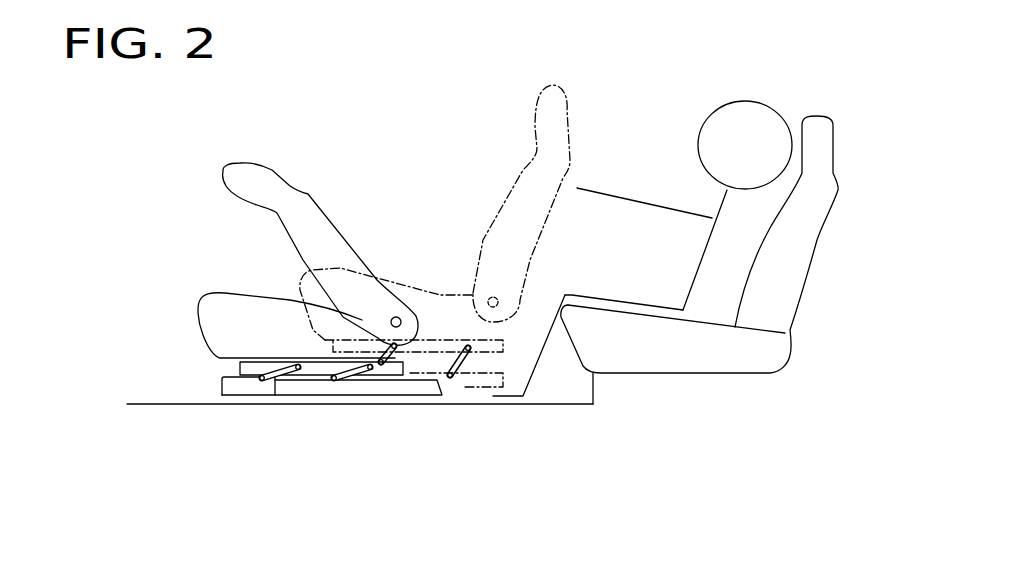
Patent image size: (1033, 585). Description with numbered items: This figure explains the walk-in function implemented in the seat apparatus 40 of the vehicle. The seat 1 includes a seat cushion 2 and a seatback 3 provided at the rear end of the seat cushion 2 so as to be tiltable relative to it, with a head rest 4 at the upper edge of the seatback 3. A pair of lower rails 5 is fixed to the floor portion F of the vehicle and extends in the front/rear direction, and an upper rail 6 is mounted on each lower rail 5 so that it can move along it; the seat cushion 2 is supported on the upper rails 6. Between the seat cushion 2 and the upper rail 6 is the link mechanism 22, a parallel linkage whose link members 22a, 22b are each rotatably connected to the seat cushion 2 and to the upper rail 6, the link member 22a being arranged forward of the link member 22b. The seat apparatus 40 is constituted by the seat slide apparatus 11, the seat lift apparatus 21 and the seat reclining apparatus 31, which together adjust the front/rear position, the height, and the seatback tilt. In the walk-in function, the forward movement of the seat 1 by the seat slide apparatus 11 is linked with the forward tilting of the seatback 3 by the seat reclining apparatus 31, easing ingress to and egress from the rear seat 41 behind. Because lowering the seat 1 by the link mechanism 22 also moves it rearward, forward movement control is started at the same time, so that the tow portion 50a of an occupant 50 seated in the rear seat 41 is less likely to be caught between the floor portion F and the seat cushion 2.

The seat 1 is at (306, 193).
The seat cushion 2 is at (227, 303).
The seatback 3 is at (340, 230).
The head rest 4 is at (248, 168).
The lower rail 5 is at (430, 391).
The upper rail 6 is at (233, 383).
The link mechanism 22 is at (282, 380).
The link member 22a is at (275, 418).
The link member 22b is at (366, 418).
The seat apparatus 40 is at (142, 156).
The seat slide apparatus 11 is at (384, 278).
The seat lift apparatus 21 is at (384, 278).
The seat reclining apparatus 31 is at (384, 278).
The rear seat 41 is at (800, 270).
The occupant 50 is at (738, 101).
The tow portion 50a is at (510, 396).
The floor portion F is at (148, 404).